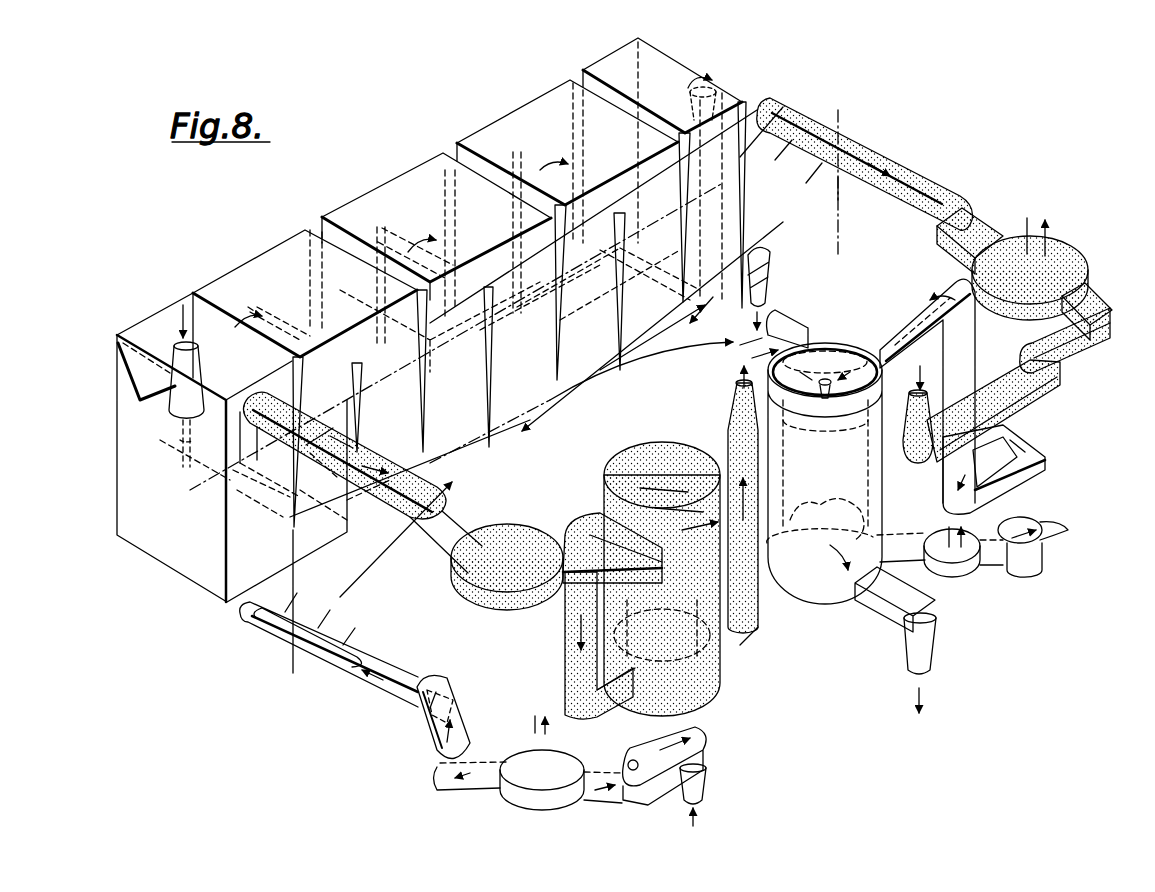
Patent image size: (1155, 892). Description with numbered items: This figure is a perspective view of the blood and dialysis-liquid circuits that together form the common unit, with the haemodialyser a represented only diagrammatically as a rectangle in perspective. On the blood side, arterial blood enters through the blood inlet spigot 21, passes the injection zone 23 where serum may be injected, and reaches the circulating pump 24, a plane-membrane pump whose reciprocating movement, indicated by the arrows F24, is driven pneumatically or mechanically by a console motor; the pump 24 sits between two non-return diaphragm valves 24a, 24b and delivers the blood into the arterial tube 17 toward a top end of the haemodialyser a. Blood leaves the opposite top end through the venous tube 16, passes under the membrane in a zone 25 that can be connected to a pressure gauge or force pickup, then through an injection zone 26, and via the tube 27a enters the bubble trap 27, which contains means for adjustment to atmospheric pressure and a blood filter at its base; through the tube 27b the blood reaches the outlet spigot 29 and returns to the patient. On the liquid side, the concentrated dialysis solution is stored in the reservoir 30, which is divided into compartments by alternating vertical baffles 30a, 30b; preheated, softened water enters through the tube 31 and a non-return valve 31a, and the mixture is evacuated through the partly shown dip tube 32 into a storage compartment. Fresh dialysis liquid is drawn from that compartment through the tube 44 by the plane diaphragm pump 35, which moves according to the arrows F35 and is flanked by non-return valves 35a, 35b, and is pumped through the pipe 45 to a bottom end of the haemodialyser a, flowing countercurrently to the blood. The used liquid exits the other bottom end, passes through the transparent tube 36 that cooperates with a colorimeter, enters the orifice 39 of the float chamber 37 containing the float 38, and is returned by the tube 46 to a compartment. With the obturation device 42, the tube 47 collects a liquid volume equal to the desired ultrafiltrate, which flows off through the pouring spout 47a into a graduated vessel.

The venous tube 16 is at (447, 492).
The arterial tube 17 is at (880, 162).
The blood inlet spigot 21 is at (922, 466).
The injection zone 23 is at (1068, 363).
The circulating pump 24 is at (1080, 256).
The non-return diaphragm valve 24a is at (1103, 319).
The non-return diaphragm valve 24b is at (960, 199).
The arrows F 24 F24 is at (1035, 225).
The zone 25 is at (512, 598).
The injection zone 26 is at (600, 525).
The bubble trap 27 is at (653, 452).
The tube 27a is at (567, 661).
The tube 27b is at (730, 434).
The outlet spigot 29 is at (736, 388).
The reservoir 30 is at (272, 250).
The vertical baffle 30a is at (580, 243).
The vertical baffle 30b is at (380, 230).
The tube 31 is at (176, 335).
The non-return valve 31a is at (185, 421).
The dip tube 32 is at (715, 90).
The plane diaphragm pump 35 is at (527, 767).
The non-return valve 35a is at (633, 760).
The non-return valve 35b is at (443, 766).
The arrows F 35 F35 is at (538, 711).
The transparent tube 36 is at (970, 358).
The float chamber 37 is at (818, 592).
The float 38 is at (787, 469).
The orifice 39 is at (826, 373).
The obturation device 42 is at (970, 578).
The tube 44 is at (705, 783).
The pipe 45 is at (267, 627).
The tube 46 is at (930, 661).
The tube 47 is at (1017, 578).
The pouring spout 47a is at (1068, 534).
The haemodialyser a is at (840, 252).